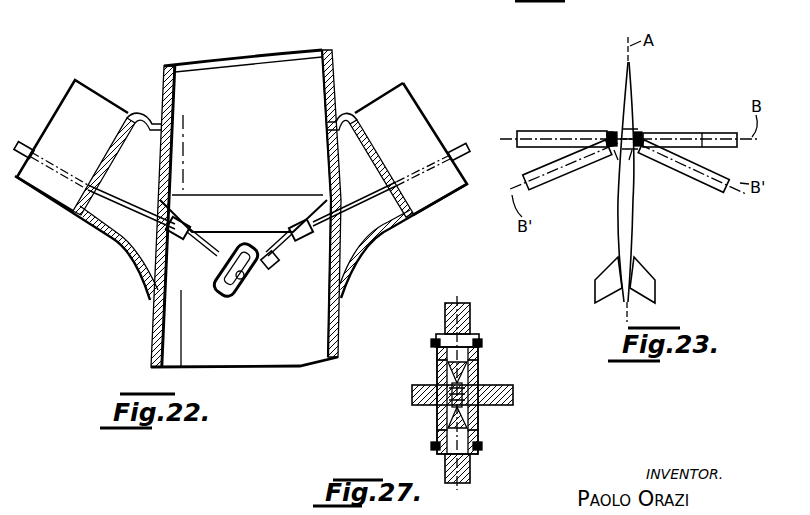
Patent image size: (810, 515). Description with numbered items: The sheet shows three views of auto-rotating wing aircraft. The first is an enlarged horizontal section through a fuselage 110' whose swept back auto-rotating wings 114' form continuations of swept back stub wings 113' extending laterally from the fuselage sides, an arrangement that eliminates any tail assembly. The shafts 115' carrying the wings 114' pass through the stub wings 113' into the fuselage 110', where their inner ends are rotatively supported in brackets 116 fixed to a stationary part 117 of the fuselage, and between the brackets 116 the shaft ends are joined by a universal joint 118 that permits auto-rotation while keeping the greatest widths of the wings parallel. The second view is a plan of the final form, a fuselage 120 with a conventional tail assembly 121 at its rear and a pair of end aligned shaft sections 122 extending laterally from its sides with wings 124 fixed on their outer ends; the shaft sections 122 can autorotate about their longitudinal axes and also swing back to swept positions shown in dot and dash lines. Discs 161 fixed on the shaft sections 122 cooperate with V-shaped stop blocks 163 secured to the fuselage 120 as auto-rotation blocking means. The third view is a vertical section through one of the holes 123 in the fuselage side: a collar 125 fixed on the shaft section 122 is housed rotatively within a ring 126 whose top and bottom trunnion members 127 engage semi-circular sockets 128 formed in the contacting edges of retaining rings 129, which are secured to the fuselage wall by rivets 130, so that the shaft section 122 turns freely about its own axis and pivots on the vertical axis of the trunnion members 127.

In FIG. 22, the fuselage 110' is at (218, 208).
In FIG. 22, the swept back stub wings 113' is at (241, 206).
In FIG. 22, the swept back auto-rotating wings 114' is at (242, 130).
In FIG. 22, the shafts 115' is at (240, 204).
In FIG. 22, the brackets 116 is at (175, 243).
In FIG. 22, the stationary part 117 is at (213, 203).
In FIG. 22, the universal joint 118 is at (236, 292).
In FIG. 23, the fuselage 120 is at (618, 233).
In FIG. 27, the fuselage 120 is at (470, 306).
In FIG. 23, the tail assembly 121 is at (645, 283).
In FIG. 23, the shaft sections 122 is at (610, 135).
In FIG. 27, the shaft sections 122 is at (513, 394).
In FIG. 27, the holes 123 is at (446, 466).
In FIG. 23, the wings 124 is at (528, 131).
In FIG. 27, the collars 125 is at (470, 411).
In FIG. 27, the rings 126 is at (446, 387).
In FIG. 27, the trunnion members 127 is at (468, 430).
In FIG. 27, the sockets 128 is at (481, 352).
In FIG. 27, the retaining rings 129 is at (437, 351).
In FIG. 27, the rivets 130 is at (436, 342).
In FIG. 23, the discs 161 is at (619, 128).
In FIG. 23, the stop blocks 163 is at (614, 152).